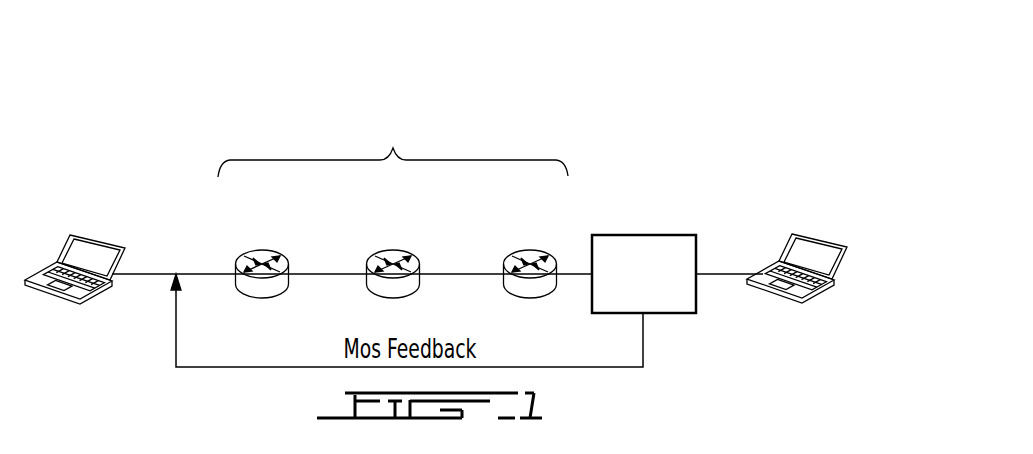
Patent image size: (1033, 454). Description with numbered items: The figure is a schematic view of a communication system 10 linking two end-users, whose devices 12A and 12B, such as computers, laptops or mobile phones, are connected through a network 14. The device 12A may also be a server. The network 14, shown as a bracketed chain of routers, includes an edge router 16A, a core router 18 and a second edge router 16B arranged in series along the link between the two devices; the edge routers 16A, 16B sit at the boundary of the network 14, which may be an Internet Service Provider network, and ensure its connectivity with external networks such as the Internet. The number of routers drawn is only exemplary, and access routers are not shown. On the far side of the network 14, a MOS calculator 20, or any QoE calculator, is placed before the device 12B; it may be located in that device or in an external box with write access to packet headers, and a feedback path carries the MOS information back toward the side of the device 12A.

The communication system 10 is at (648, 115).
The end-user device 12A is at (90, 236).
The end-user device 12B is at (812, 236).
The network 14 is at (393, 145).
The edge router 16A is at (252, 299).
The edge router 16B is at (526, 299).
The core router 18 is at (370, 290).
The MOS calculator 20 is at (663, 235).